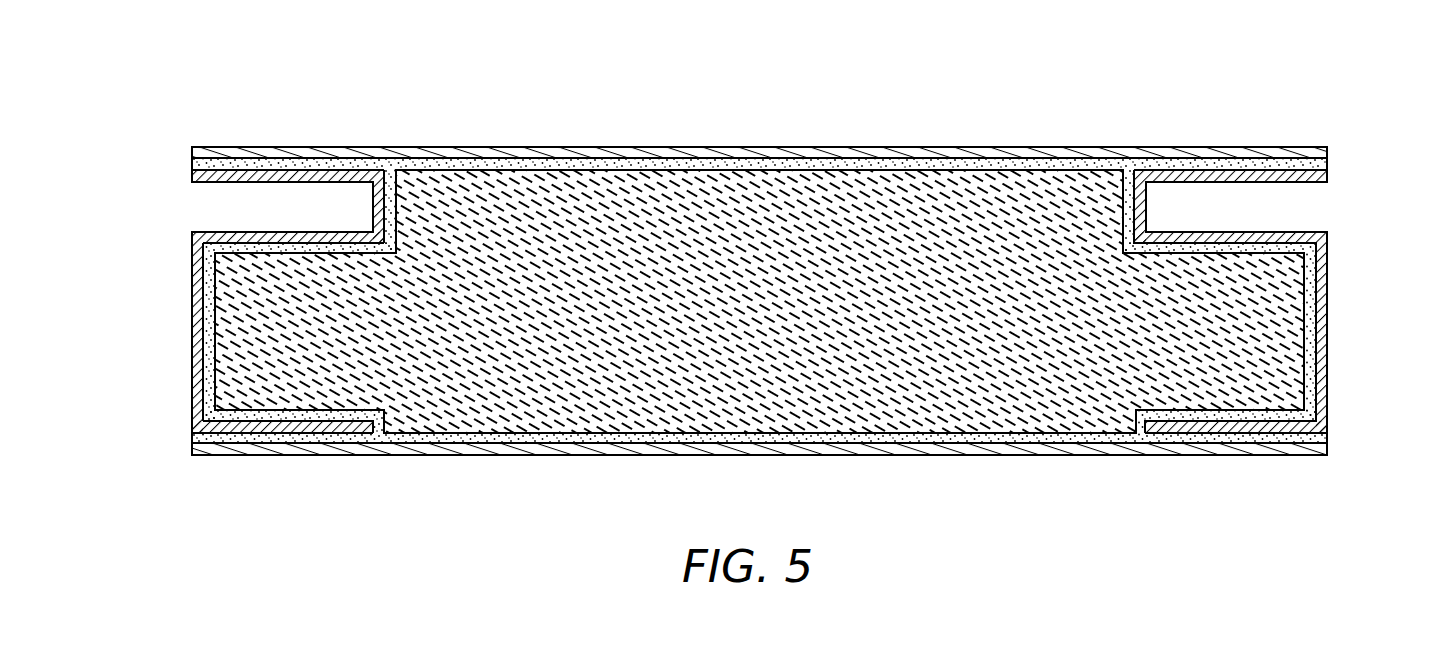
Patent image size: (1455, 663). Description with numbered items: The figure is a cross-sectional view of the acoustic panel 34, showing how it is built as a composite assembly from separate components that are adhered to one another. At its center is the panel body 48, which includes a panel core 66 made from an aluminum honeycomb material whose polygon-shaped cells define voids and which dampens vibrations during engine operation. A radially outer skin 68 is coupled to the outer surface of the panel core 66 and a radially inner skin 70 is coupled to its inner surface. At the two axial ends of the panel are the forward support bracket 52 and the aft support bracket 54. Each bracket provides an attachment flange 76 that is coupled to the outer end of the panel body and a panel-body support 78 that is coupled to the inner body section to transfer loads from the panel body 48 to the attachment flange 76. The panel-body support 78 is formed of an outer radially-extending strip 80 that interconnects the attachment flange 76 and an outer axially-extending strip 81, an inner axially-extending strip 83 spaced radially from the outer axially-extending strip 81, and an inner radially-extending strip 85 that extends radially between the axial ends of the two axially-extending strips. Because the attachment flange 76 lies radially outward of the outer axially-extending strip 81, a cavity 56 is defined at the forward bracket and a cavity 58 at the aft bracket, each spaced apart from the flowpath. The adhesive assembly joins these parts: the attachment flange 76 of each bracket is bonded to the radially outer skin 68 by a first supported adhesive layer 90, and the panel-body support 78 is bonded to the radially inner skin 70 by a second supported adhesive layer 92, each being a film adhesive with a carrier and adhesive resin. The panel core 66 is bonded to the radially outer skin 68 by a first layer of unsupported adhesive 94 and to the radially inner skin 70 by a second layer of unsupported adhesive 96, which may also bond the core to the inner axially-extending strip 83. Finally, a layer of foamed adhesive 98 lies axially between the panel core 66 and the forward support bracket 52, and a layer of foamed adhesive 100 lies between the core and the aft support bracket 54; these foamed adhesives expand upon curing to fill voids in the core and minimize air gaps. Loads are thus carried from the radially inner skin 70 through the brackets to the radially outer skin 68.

The acoustic panel 34 is at (1145, 135).
The panel body 48 is at (1315, 390).
The forward support bracket 52 is at (182, 257).
The aft support bracket 54 is at (1365, 217).
The cavity 56 is at (205, 197).
The cavity 58 is at (1300, 195).
The panel core 66 is at (920, 370).
The radially outer skin 68 is at (718, 156).
The radially inner skin 70 is at (695, 447).
The attachment flange 76 is at (187, 163).
The panel-body support 78 is at (192, 347).
The outer radially-extending strip 80 is at (367, 190).
The outer axially-extending strip 81 is at (216, 232).
The inner axially-extending strip 83 is at (265, 428).
The inner radially-extending strip 85 is at (199, 388).
The first supported adhesive layer 90 is at (300, 158).
The second supported adhesive layer 92 is at (332, 437).
The first layer of unsupported adhesive 94 is at (843, 160).
The second layer of unsupported adhesive 96 is at (572, 437).
The layer of foamed adhesive 98 is at (207, 304).
The layer of foamed adhesive 100 is at (1310, 280).